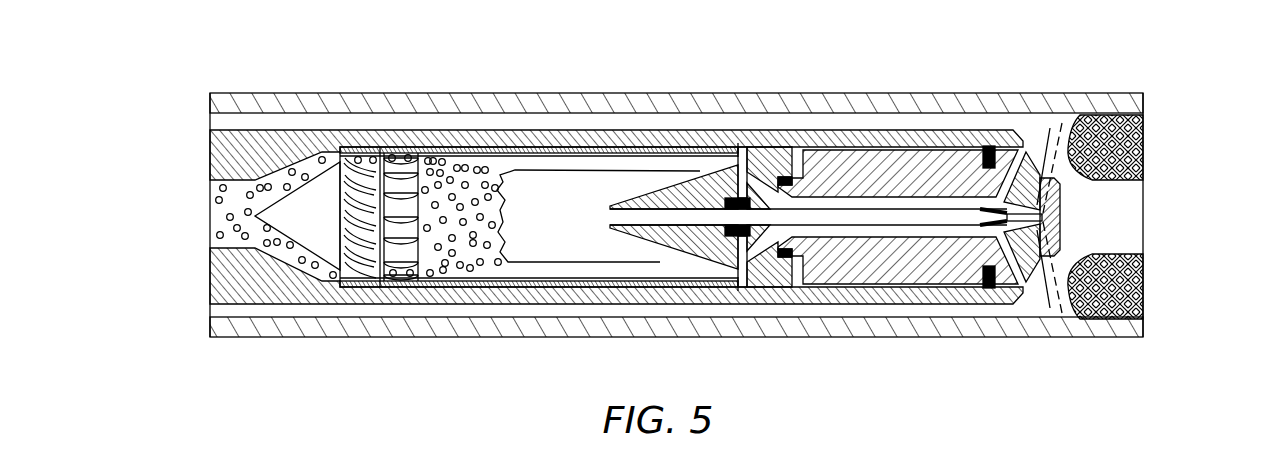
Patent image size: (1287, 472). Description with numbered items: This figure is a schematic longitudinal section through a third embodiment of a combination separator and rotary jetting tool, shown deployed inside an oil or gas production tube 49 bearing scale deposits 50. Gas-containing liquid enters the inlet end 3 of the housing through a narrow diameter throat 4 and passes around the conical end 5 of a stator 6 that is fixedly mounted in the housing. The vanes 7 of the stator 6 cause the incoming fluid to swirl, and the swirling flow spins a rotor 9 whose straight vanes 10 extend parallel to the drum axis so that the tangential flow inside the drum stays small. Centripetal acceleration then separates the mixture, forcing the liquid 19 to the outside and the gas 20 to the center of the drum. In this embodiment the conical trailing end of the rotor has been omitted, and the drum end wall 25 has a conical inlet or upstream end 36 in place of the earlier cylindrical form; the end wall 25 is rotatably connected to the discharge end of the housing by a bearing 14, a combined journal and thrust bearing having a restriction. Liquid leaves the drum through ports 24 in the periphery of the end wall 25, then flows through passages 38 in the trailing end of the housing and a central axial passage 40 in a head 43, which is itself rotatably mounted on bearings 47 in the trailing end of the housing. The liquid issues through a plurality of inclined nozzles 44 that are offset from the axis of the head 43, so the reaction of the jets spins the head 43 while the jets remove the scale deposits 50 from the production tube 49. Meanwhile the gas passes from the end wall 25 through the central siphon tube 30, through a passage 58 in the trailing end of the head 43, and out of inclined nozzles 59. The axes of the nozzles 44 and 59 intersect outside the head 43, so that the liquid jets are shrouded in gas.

The inlet end 3 is at (210, 158).
The narrow diameter throat 4 is at (218, 247).
The conical end 5 is at (300, 224).
The stator 6 is at (327, 140).
The vanes 7 is at (368, 258).
The rotor 9 is at (397, 180).
The straight vanes 10 is at (407, 262).
The bearing 14 is at (735, 222).
The liquid 19 is at (482, 150).
The gas 20 is at (556, 231).
The ports 24 is at (742, 148).
The end wall 25 is at (733, 146).
The siphon tube 30 is at (915, 226).
The conical inlet end 36 is at (663, 242).
The passages 38 is at (775, 165).
The central axial passage 40 is at (820, 238).
The head 43 is at (878, 150).
The nozzles 44 is at (1030, 158).
The bearings 47 is at (786, 178).
The production tube 49 is at (848, 336).
The scale deposits 50 is at (1140, 145).
The passage 58 is at (1030, 270).
The inclined nozzles 59 is at (1062, 237).